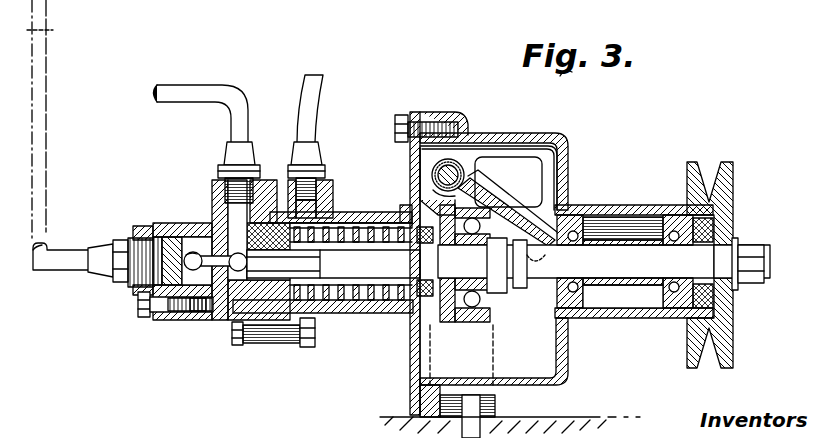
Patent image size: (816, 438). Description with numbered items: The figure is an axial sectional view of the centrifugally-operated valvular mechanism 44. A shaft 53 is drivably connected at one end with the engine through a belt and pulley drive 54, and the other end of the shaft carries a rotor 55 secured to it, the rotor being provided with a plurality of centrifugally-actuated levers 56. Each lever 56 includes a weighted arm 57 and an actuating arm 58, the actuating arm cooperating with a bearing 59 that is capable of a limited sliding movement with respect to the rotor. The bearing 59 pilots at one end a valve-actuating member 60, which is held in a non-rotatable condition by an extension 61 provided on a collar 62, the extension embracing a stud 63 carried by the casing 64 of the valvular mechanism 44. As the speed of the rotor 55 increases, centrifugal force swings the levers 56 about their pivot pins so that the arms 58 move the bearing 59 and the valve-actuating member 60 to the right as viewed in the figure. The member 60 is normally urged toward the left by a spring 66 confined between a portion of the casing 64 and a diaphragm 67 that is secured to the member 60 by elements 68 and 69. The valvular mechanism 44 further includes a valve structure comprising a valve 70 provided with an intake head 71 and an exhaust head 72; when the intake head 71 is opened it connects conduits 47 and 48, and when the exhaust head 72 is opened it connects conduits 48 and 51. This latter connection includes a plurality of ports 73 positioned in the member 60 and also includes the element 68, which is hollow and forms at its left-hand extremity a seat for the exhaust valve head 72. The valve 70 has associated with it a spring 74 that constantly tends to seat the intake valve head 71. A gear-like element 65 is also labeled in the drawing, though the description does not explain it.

The centrifugally-operated valvular mechanism 44 is at (337, 176).
The conduit 47 is at (75, 260).
The conduit 48 is at (240, 128).
The conduit 51 is at (318, 128).
The shaft 53 is at (604, 242).
The belt and pulley drive 54 is at (711, 170).
The rotor 55 is at (500, 292).
The centrifugally-actuated levers 56 is at (462, 168).
The weighted arm 57 is at (530, 160).
The actuating arm 58 is at (410, 180).
The bearing 59 is at (495, 322).
The valve-actuating member 60 is at (392, 290).
The extension 61 is at (408, 214).
The collar 62 is at (408, 326).
The stud 63 is at (480, 186).
The casing 64 is at (410, 154).
The shaft 65 is at (450, 168).
The spring 66 is at (346, 302).
The diaphragm 67 is at (285, 322).
The element 68 is at (226, 305).
The element 69 is at (345, 218).
The valve 70 is at (195, 307).
The intake head 71 is at (197, 242).
The exhaust head 72 is at (221, 228).
The ports 73 is at (333, 264).
The spring 74 is at (208, 313).